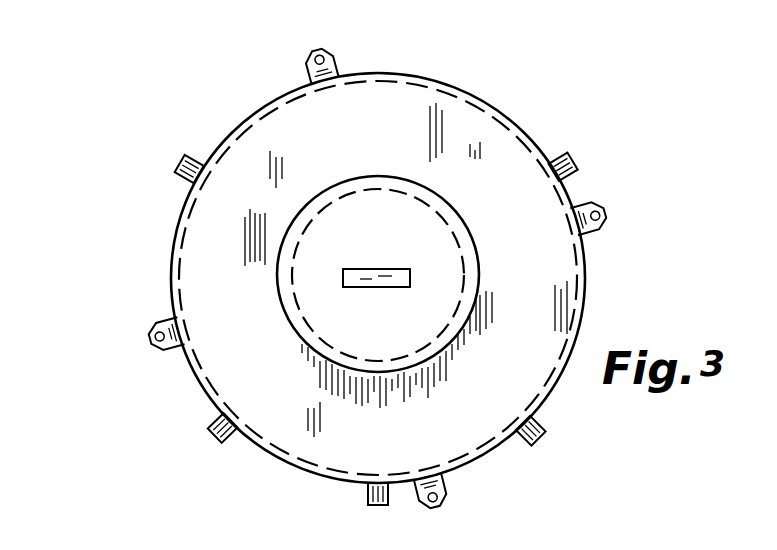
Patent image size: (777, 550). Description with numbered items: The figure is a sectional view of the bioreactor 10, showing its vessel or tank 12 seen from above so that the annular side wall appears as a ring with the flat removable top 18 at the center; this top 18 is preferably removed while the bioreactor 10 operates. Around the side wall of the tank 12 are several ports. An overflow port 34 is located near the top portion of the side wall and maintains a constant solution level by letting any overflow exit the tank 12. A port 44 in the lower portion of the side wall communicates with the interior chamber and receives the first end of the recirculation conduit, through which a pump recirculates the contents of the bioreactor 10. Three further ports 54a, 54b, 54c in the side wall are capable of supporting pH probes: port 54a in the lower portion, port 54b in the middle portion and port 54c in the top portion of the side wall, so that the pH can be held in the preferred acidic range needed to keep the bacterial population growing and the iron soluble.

The bioreactor 10 is at (517, 112).
The tank 12 is at (585, 261).
The removable top 18 is at (398, 249).
The overflow port 34 is at (212, 438).
The port 44 is at (536, 439).
The port 54a is at (368, 504).
The port 54b is at (172, 170).
The port 54c is at (578, 163).